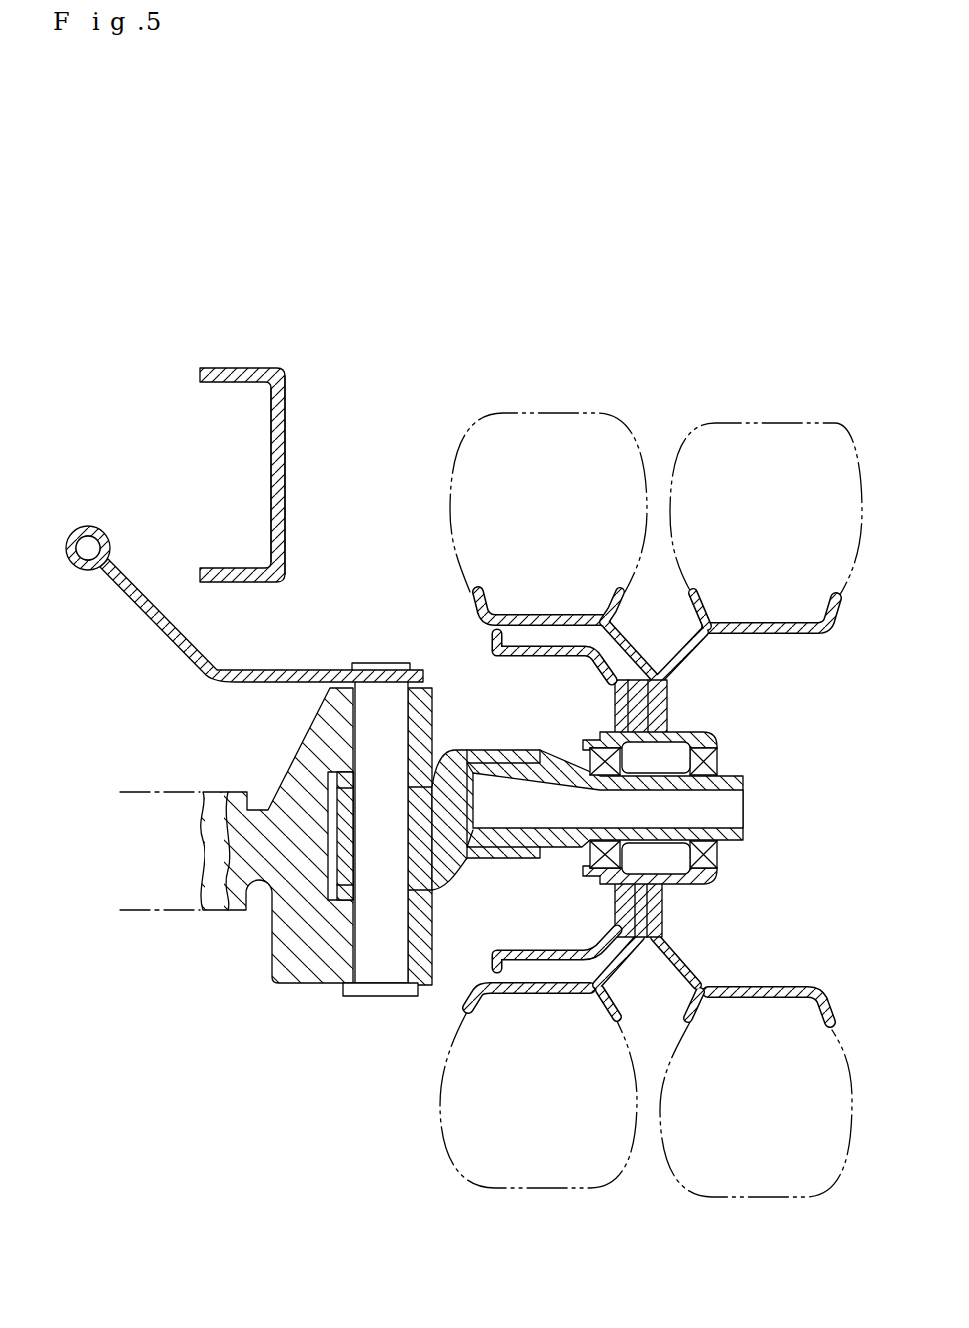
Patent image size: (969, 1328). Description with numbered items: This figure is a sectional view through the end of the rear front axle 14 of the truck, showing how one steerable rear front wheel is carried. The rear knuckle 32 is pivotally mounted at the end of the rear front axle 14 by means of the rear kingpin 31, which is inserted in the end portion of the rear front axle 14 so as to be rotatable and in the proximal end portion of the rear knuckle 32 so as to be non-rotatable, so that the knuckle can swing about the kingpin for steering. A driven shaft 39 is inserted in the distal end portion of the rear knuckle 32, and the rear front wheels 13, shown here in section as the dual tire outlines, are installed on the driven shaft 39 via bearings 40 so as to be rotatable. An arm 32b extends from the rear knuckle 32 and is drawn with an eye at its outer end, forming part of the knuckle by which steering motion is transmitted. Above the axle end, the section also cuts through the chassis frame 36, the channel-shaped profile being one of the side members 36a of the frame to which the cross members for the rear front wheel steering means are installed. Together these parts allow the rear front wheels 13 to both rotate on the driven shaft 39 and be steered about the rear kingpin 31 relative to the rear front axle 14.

The rear front wheels 13 is at (713, 422).
The rear front axle 14 is at (207, 912).
The rear kingpin 31 is at (384, 997).
The rear knuckle 32 is at (481, 746).
The arm of hub body 32b is at (173, 645).
The chassis frame 36 is at (286, 406).
The side member 36a is at (288, 482).
The driven shaft 39 is at (556, 856).
The bearings 40 is at (717, 853).